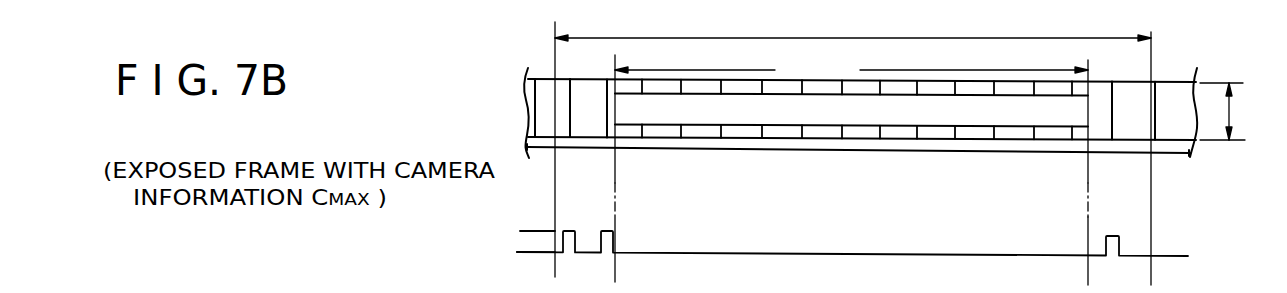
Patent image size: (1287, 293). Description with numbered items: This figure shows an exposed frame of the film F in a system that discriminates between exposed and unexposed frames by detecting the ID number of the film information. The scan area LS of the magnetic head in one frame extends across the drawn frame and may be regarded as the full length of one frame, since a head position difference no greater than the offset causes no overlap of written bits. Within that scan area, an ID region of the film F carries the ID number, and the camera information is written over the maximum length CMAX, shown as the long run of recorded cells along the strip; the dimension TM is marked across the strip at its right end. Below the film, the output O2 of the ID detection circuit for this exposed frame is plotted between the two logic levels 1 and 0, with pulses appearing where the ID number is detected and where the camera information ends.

The film F is at (582, 147).
The ID number ID is at (568, 102).
The scan area LS is at (853, 149).
The maximum length CMAX is at (851, 167).
The film width (trailer margin) TM is at (1233, 111).
The output of the ID detection circuit O2 is at (869, 249).
The signal level 1 is at (527, 228).
The signal level 0 is at (526, 250).